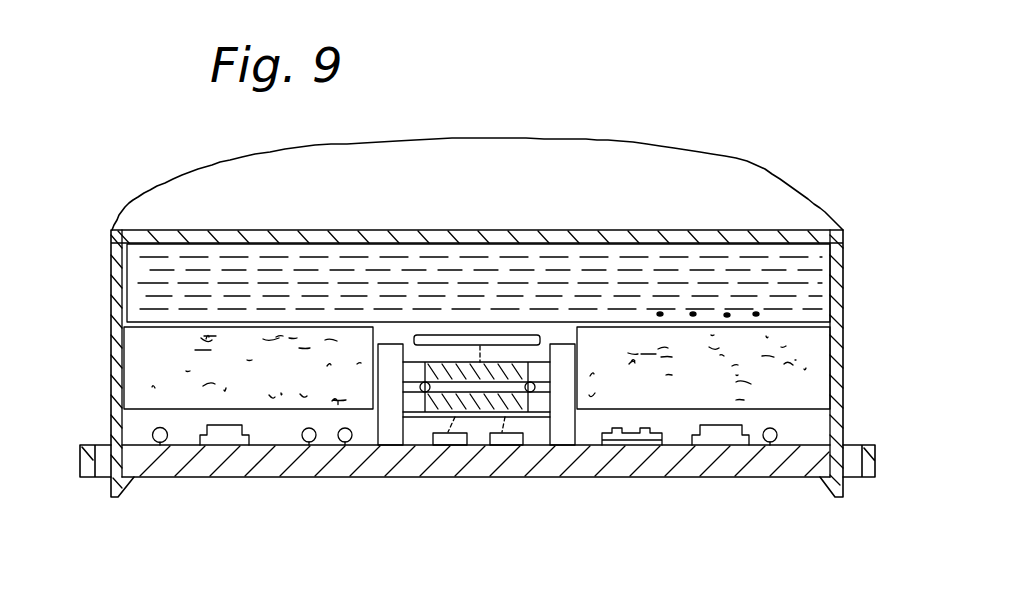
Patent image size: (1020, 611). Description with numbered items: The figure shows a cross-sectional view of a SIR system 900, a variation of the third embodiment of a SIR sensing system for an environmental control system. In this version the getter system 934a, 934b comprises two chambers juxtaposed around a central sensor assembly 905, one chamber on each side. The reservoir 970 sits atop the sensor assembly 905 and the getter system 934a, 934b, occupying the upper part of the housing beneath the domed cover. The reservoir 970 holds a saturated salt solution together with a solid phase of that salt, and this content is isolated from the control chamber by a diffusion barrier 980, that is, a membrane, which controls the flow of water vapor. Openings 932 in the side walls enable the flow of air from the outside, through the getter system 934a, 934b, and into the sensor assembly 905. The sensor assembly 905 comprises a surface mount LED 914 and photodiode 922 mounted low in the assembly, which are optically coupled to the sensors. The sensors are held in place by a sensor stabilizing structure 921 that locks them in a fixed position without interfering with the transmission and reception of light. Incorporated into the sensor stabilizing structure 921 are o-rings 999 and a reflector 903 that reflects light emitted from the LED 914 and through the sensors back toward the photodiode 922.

The SIR system 900 is at (700, 113).
The reservoir 970 is at (185, 273).
The sensor stabilizing structure 921 is at (410, 343).
The reflector 903 is at (527, 343).
The diffusion barrier 980 is at (727, 312).
The openings 932 is at (112, 357).
The getter system chamber 934a is at (155, 388).
The getter system chamber 934b is at (818, 387).
The surface mount LED 914 is at (453, 445).
The photodiode 922 is at (523, 480).
The o-rings 999 is at (535, 388).
The sensor assembly 905 is at (491, 500).